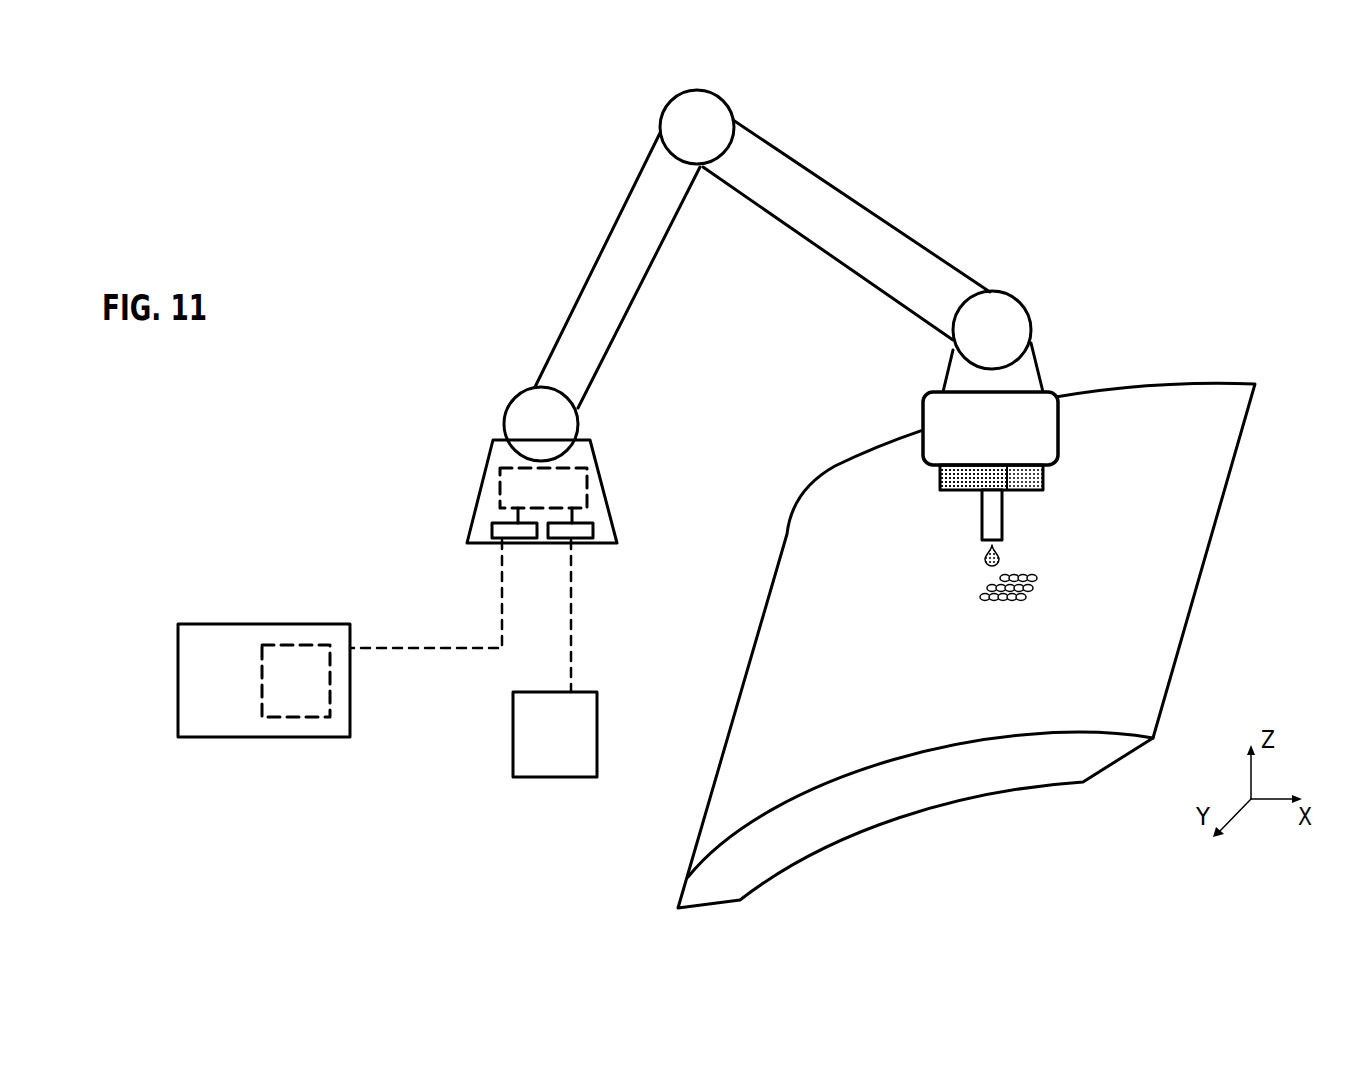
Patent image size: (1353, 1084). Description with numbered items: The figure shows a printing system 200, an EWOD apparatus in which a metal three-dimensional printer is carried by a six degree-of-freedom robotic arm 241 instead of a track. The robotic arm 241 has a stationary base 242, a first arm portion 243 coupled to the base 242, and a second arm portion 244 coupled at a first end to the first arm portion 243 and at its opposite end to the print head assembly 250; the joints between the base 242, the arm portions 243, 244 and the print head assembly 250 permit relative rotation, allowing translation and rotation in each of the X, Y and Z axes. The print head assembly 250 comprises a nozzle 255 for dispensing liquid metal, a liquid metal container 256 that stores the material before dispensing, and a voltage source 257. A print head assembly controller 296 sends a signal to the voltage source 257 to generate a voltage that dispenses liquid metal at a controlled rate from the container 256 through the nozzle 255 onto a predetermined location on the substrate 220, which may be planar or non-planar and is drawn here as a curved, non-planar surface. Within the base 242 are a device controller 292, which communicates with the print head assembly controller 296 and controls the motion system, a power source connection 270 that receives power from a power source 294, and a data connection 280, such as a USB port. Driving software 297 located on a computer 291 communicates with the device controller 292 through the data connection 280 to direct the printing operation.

The printing system 200 is at (350, 254).
The substrate 220 is at (768, 706).
The robotic arm 241 is at (548, 302).
The stationary base 242 is at (478, 491).
The first arm portion 243 is at (555, 337).
The second arm portion 244 is at (927, 260).
The print head assembly 250 is at (1058, 357).
The nozzle 255 is at (981, 517).
The liquid metal container 256 is at (925, 395).
The voltage source 257 is at (1025, 477).
The power source connection 270 is at (593, 533).
The data connection 280 is at (493, 538).
The computer 291 is at (178, 682).
The device controller 292 is at (497, 483).
The power source 294 is at (574, 752).
The print head assembly controller 296 is at (940, 478).
The driving software 297 is at (315, 698).